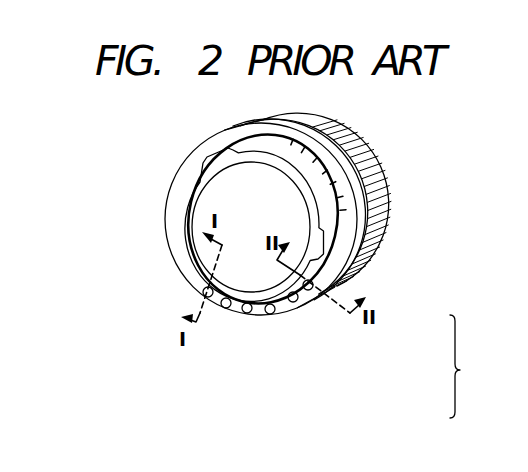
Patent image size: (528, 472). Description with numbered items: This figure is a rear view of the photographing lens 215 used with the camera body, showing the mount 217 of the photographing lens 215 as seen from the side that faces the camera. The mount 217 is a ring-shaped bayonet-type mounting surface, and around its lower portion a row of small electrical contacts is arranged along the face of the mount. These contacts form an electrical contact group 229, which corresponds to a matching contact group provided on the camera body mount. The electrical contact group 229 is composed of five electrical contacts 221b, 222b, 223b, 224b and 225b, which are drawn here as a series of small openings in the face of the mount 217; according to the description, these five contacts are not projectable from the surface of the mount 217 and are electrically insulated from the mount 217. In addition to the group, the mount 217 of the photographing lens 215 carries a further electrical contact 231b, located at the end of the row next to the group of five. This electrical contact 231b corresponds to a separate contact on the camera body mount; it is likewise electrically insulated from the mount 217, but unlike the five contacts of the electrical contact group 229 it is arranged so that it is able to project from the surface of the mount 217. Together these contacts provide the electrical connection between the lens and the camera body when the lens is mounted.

The photographing lens 215 is at (419, 111).
The mount of the photographing lens 217 is at (184, 190).
The electrical contact 221b is at (312, 290).
The electrical contact 222b is at (297, 302).
The electrical contact 223b is at (274, 314).
The electrical contact 224b is at (251, 313).
The electrical contact 225b is at (230, 308).
The electrical contact group 229 is at (476, 366).
The electrical contact 231b is at (208, 297).